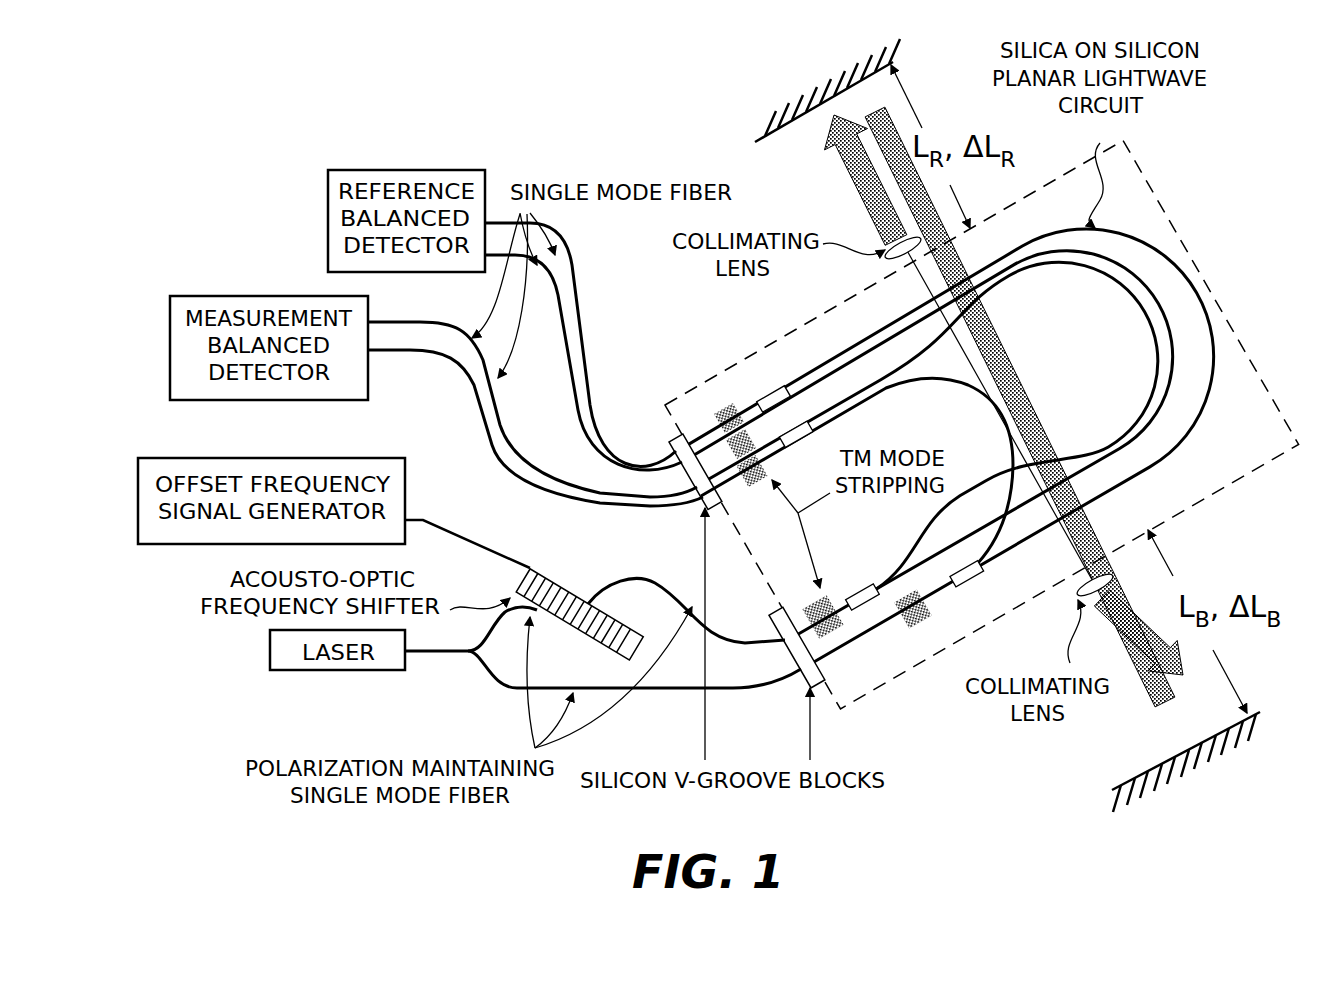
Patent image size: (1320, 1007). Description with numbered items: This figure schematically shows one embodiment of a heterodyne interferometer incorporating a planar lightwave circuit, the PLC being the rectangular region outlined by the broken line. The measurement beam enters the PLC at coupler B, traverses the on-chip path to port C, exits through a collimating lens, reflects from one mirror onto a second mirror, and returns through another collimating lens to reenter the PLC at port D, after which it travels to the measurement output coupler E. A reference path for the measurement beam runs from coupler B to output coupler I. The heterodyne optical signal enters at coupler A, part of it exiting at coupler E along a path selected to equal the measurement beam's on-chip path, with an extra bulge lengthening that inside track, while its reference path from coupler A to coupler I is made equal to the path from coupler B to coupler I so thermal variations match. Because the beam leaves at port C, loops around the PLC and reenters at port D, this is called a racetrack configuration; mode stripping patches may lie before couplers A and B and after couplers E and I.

The output coupler I is at (774, 387).
The output coupler E is at (796, 447).
The coupler A is at (859, 586).
The coupler B is at (967, 588).
The port C is at (927, 258).
The port D is at (1098, 565).